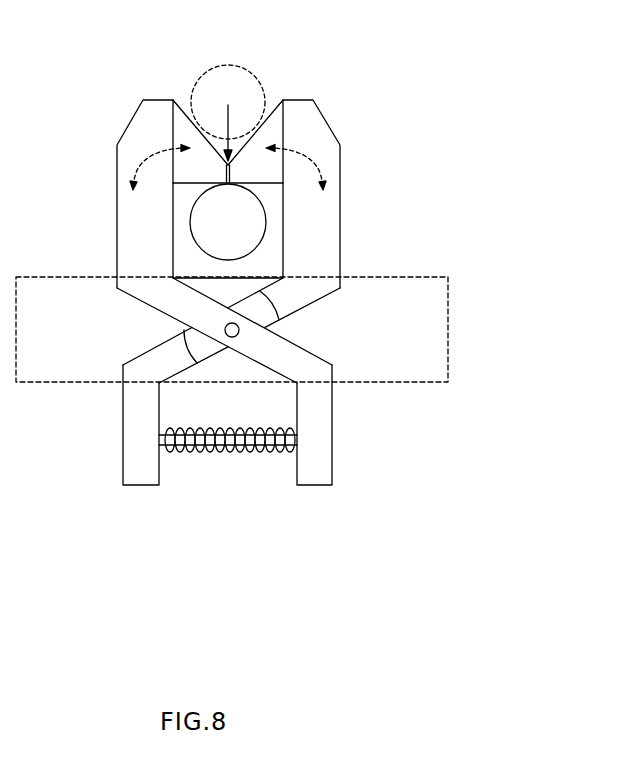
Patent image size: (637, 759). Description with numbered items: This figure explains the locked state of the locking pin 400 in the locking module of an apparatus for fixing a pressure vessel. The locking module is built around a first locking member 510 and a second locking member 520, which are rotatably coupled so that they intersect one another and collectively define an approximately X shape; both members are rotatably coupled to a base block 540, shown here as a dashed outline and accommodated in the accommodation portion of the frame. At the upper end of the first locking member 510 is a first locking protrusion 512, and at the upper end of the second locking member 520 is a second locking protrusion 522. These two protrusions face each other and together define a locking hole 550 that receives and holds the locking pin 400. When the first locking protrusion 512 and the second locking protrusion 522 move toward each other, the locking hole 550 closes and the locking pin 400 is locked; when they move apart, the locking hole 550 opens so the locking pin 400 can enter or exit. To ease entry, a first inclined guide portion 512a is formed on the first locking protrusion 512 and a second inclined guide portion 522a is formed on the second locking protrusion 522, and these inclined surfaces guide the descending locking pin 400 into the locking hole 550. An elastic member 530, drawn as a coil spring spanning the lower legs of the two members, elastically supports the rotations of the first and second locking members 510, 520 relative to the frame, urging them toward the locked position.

The locking pin 400 is at (255, 255).
The first locking member 510 is at (128, 242).
The first locking protrusion 512 is at (207, 172).
The first inclined guide portion 512a is at (216, 130).
The second locking member 520 is at (328, 239).
The second locking protrusion 522 is at (243, 172).
The second inclined guide portion 522a is at (260, 120).
The elastic member 530 is at (247, 452).
The base block 540 is at (448, 330).
The locking hole 550 is at (193, 263).